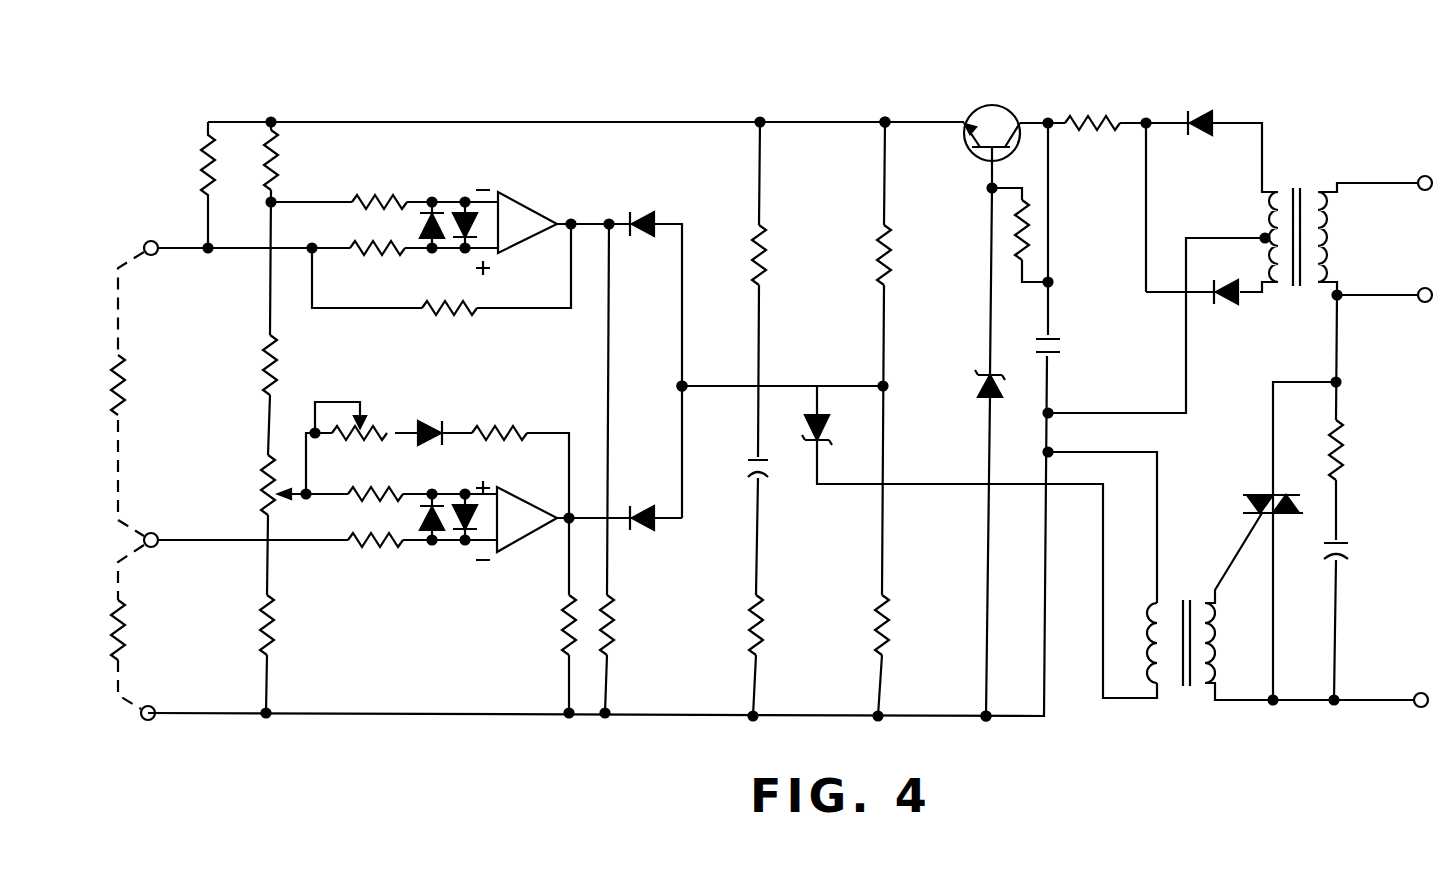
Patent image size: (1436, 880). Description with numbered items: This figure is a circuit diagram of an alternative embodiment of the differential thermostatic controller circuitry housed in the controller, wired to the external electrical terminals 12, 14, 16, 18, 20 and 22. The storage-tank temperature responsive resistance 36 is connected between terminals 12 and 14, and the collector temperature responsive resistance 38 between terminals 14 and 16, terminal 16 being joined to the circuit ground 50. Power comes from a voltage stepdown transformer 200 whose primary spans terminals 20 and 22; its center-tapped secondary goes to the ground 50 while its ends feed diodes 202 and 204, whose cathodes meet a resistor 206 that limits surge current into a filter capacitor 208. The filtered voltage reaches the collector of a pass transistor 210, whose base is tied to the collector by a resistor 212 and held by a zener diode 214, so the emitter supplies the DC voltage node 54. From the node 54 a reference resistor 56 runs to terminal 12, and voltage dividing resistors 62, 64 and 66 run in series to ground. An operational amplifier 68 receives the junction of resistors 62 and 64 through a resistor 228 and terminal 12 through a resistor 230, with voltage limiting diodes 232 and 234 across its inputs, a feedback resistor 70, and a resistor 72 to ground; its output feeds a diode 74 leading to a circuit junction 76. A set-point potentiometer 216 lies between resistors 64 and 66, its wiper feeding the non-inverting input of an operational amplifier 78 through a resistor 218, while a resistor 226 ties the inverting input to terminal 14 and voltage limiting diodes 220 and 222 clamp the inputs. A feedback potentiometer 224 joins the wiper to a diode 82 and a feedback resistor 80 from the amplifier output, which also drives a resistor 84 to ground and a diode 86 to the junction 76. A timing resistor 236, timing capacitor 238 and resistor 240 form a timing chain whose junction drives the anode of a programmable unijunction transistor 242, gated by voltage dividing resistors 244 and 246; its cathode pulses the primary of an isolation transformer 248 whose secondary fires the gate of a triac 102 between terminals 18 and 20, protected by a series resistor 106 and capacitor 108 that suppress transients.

The electrical terminal 12 is at (145, 243).
The electrical terminal 14 is at (175, 530).
The electrical terminal 16 is at (152, 697).
The electrical terminal 18 is at (1418, 692).
The electrical terminal 20 is at (1422, 289).
The electrical terminal 22 is at (1422, 175).
The temperature responsive resistance 36 is at (125, 370).
The temperature responsive resistance 38 is at (125, 633).
The circuit ground 50 is at (987, 718).
The DC voltage node 54 is at (888, 120).
The reference resistor 56 is at (205, 165).
The voltage dividing resistor 62 is at (282, 158).
The voltage dividing resistor 64 is at (280, 358).
The voltage dividing resistor 66 is at (276, 625).
The operational amplifier 68 is at (520, 200).
The feedback resistor 70 is at (478, 315).
The resistor 72 is at (612, 640).
The diode 74 is at (650, 218).
The circuit junction 76 is at (686, 384).
The operational amplifier 78 is at (512, 557).
The feedback resistor 80 is at (530, 430).
The diode 82 is at (430, 428).
The resistor 84 is at (562, 640).
The diode 86 is at (648, 528).
The triac 102 is at (1264, 494).
The resistor 106 is at (1345, 438).
The capacitor 108 is at (1350, 548).
The voltage stepdown transformer 200 is at (1291, 188).
The diode 202 is at (1205, 120).
The diode 204 is at (1232, 300).
The resistor 206 is at (1080, 118).
The filter capacitor 208 is at (1062, 352).
The pass transistor 210 is at (1008, 110).
The resistor 212 is at (1020, 268).
The zener diode 214 is at (982, 392).
The set-point potentiometer 216 is at (264, 493).
The resistor 218 is at (352, 492).
The voltage limiting diode 220 is at (432, 496).
The voltage limiting diode 222 is at (462, 542).
The feedback potentiometer 224 is at (362, 442).
The resistor 226 is at (368, 550).
The resistor 228 is at (408, 205).
The resistor 230 is at (378, 255).
The voltage limiting diode 232 is at (432, 204).
The voltage limiting diode 234 is at (462, 248).
The timing resistor 236 is at (768, 268).
The timing capacitor 238 is at (766, 478).
The resistor 240 is at (765, 645).
The programmable unijunction transistor 242 is at (820, 412).
The voltage dividing resistor 244 is at (890, 278).
The voltage dividing resistor 246 is at (888, 650).
The isolation transformer 248 is at (1186, 690).